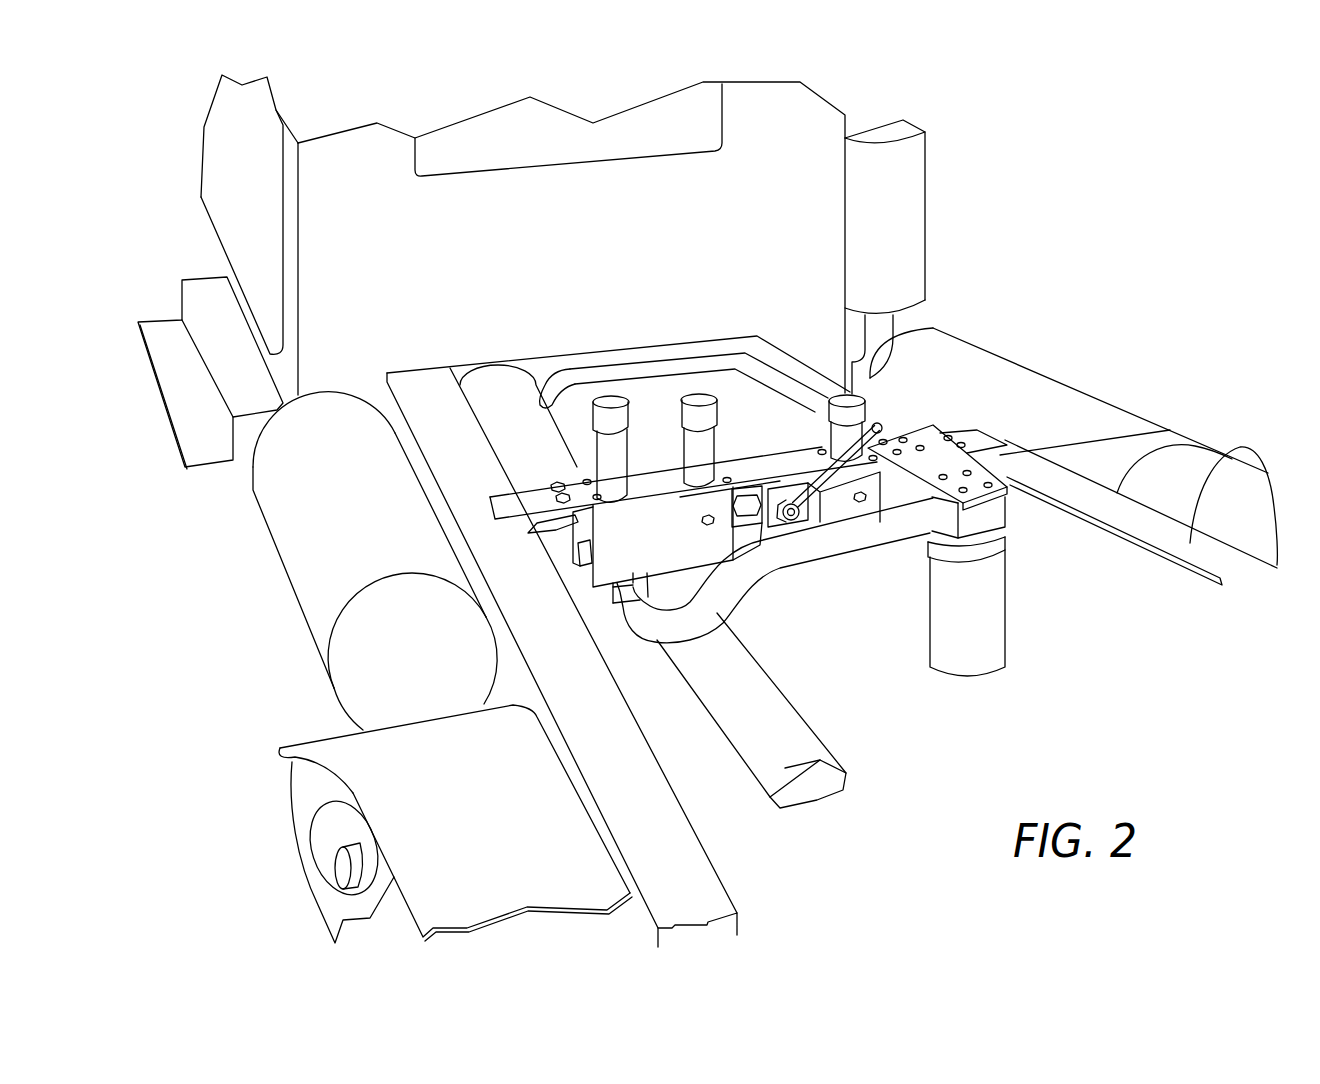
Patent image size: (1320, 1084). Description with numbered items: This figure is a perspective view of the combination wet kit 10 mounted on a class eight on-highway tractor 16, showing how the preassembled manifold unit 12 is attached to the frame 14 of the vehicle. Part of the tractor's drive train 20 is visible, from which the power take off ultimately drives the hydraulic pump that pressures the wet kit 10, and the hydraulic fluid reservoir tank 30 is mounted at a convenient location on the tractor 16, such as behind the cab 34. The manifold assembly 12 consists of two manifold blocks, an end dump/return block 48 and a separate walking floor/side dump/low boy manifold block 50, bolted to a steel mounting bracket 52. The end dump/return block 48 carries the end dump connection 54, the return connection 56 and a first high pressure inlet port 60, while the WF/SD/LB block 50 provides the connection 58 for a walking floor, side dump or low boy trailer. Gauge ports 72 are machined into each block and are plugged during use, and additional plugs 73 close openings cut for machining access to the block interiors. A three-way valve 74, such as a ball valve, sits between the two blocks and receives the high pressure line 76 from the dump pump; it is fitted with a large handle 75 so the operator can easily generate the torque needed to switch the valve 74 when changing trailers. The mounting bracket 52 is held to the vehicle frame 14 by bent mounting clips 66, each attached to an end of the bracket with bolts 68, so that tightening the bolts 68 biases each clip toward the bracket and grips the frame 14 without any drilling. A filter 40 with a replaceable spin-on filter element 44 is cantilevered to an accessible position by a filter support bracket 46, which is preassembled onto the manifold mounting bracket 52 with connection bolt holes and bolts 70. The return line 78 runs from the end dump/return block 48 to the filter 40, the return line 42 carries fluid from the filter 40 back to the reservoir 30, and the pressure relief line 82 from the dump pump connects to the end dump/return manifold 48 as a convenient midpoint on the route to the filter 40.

The wet kit 10 is at (1042, 296).
The manifold unit 12 is at (1005, 409).
The frame 14 is at (683, 862).
The tractor 16 is at (962, 178).
The drive train 20 is at (787, 740).
The hydraulic fluid reservoir tank 30 is at (497, 382).
The cab 34 is at (583, 208).
The filter 40 is at (993, 517).
The return line 42 is at (715, 358).
The spin-on filter element 44 is at (993, 603).
The filter support bracket 46 is at (1170, 430).
The end dump/return block 48 is at (590, 562).
The walking floor/side dump/low boy manifold block 50 is at (870, 478).
The mounting bracket 52 is at (575, 488).
The end dump connection 54 is at (700, 398).
The return connection 56 is at (608, 397).
The connection 58 is at (843, 370).
The first high pressure inlet port 60 is at (750, 490).
The mounting clip 66 is at (567, 527).
The bolts 68 is at (558, 486).
The connection bolt holes and bolts 70 is at (907, 440).
The gauge ports 72 is at (710, 524).
The plugs 73 is at (582, 548).
The three-way valve 74 is at (800, 552).
The handle 75 is at (848, 445).
The high pressure line 76 is at (781, 562).
The return line 78 is at (792, 585).
The pressure relief line 82 is at (640, 608).